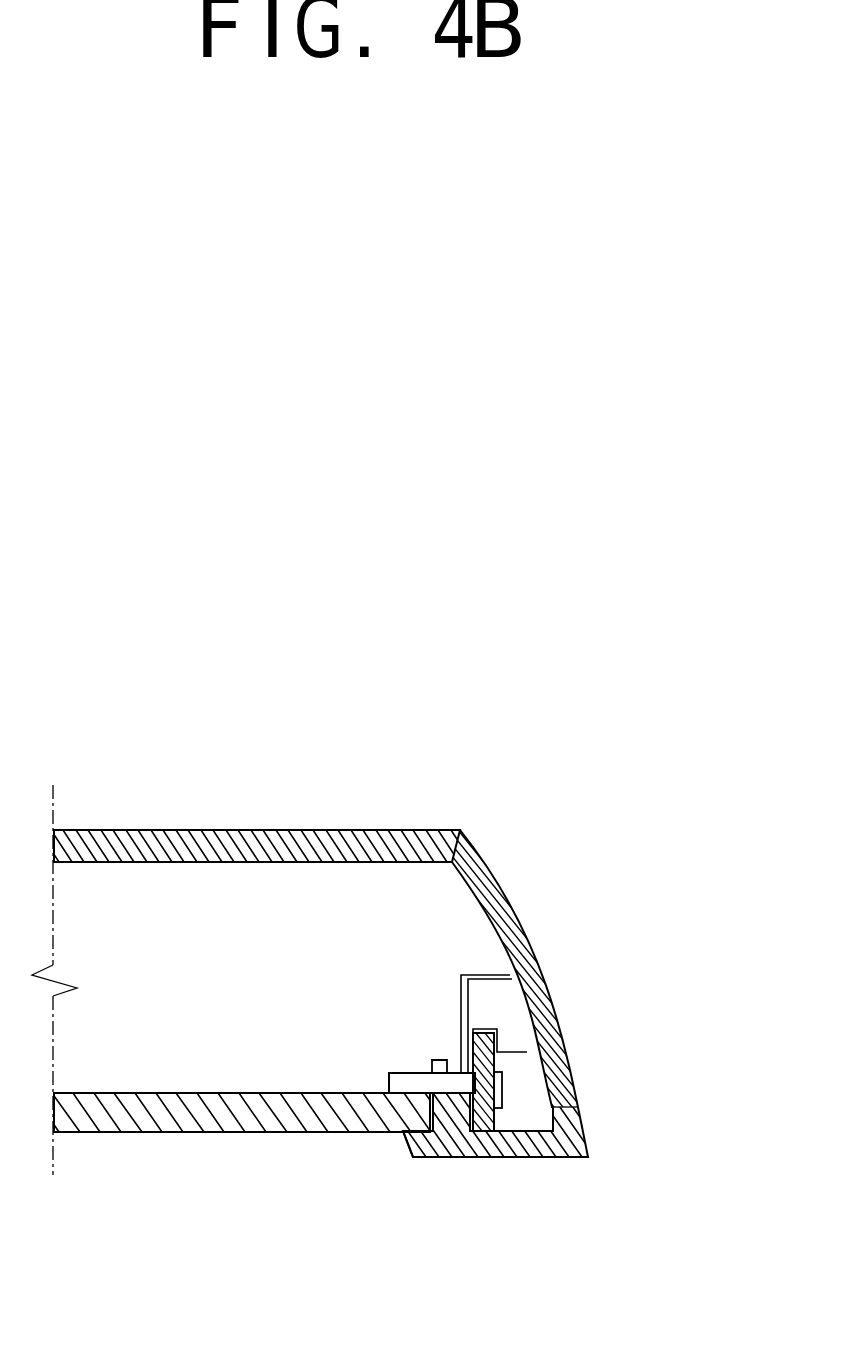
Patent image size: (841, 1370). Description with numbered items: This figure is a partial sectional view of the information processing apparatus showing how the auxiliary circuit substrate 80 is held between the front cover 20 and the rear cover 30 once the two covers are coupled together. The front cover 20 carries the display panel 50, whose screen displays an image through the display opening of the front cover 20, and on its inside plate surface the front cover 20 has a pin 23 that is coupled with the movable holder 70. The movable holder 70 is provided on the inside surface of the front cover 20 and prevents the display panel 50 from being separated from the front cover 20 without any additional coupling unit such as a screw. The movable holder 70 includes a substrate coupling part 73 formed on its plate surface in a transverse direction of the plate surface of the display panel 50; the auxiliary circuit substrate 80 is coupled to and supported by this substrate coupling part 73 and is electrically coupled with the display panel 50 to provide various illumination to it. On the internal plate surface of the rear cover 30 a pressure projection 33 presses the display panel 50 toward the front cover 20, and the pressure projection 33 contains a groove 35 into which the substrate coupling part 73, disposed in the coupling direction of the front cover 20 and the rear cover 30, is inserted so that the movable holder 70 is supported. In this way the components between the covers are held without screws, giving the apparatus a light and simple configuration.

The front cover 20 is at (491, 1157).
The pin 23 is at (437, 1060).
The rear cover 30 is at (250, 830).
The pressure projection 33 is at (510, 980).
The groove 35 is at (498, 1033).
The display panel 50 is at (160, 1133).
The movable holder 70 is at (410, 1131).
The substrate coupling part 73 is at (528, 1157).
The auxiliary circuit substrate 80 is at (502, 1087).